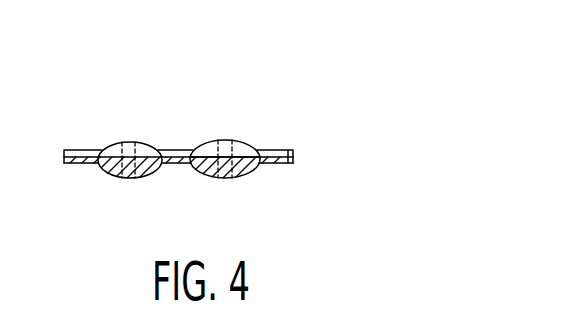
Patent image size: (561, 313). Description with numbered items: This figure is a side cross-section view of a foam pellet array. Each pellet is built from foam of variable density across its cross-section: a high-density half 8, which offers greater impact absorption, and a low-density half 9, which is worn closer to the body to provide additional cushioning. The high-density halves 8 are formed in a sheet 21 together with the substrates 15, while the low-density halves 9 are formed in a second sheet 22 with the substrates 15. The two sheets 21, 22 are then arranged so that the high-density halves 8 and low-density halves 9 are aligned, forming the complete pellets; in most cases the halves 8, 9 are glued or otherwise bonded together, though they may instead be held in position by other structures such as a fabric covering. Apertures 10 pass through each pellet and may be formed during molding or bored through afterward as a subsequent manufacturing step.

The high-density half 8 is at (142, 147).
The low-density half 9 is at (142, 175).
The aperture 10 is at (129, 140).
The substrate 15 is at (177, 167).
The sheet 21 is at (293, 151).
The sheet 22 is at (293, 163).